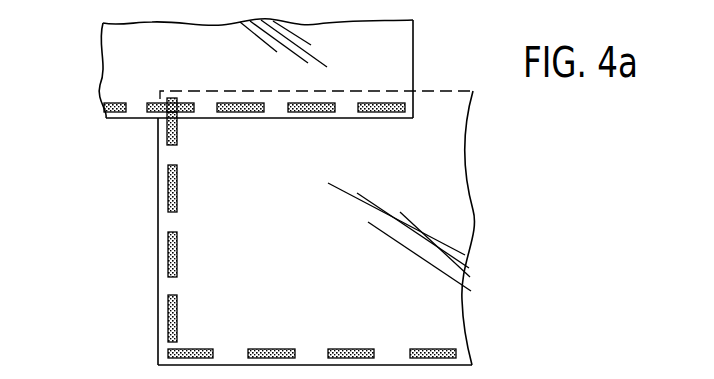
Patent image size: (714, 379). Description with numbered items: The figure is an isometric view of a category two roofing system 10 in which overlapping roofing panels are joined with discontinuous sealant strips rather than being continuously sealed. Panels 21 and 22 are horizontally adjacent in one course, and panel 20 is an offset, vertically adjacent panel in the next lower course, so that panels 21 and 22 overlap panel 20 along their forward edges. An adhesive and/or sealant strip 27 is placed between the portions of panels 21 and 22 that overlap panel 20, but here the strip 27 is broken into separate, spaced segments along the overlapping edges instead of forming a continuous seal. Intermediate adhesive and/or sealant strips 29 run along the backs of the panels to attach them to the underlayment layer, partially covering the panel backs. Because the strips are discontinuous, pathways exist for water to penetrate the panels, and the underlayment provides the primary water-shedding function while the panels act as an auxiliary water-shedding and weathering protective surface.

The display device 10 is at (128, 300).
The panel 20 is at (139, 131).
The panel 21 is at (192, 69).
The panel 22 is at (310, 266).
The adhesive and/or sealant strip 27 is at (327, 101).
The intermediate adhesive and/or sealant strips 29 is at (242, 112).